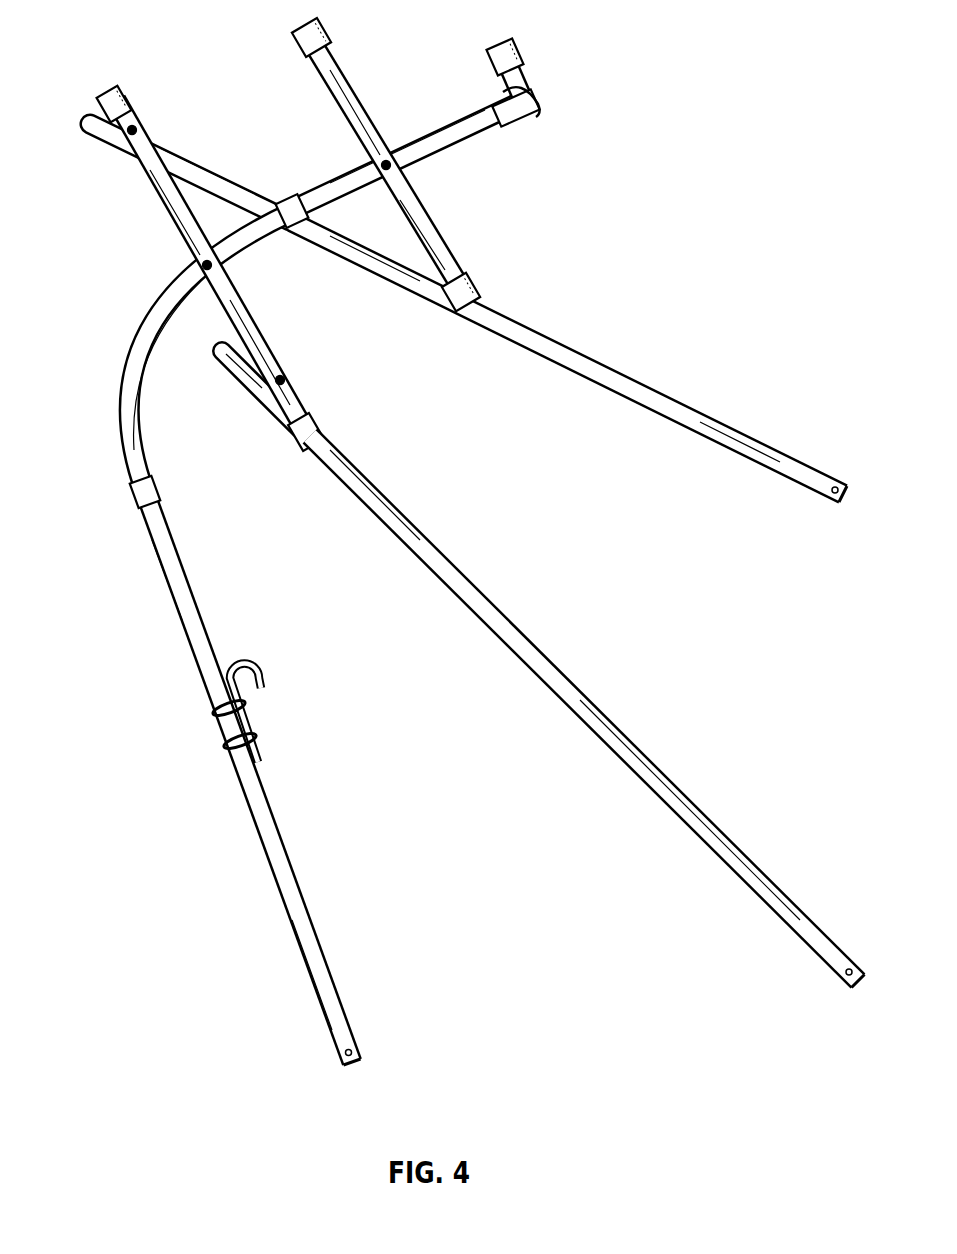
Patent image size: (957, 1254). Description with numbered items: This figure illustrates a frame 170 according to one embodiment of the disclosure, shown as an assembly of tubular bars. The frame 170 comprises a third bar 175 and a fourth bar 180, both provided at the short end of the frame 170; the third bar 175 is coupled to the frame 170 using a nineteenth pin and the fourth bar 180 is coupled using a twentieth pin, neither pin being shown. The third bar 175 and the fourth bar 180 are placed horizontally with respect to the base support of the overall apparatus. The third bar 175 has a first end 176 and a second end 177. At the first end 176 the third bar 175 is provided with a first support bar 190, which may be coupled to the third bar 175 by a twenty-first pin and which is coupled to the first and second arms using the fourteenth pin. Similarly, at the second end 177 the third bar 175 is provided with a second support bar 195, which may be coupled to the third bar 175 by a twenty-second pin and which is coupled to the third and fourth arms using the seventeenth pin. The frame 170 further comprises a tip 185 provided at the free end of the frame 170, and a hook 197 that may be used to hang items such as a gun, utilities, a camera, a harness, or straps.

The frame 170 is at (180, 617).
The third bar 175 is at (163, 211).
The first end 176 is at (134, 150).
The second end 177 is at (297, 411).
The fourth bar 180 is at (357, 83).
The tip 185 is at (532, 91).
The first support bar 190 is at (670, 396).
The second support bar 195 is at (594, 702).
The hook 197 is at (249, 655).